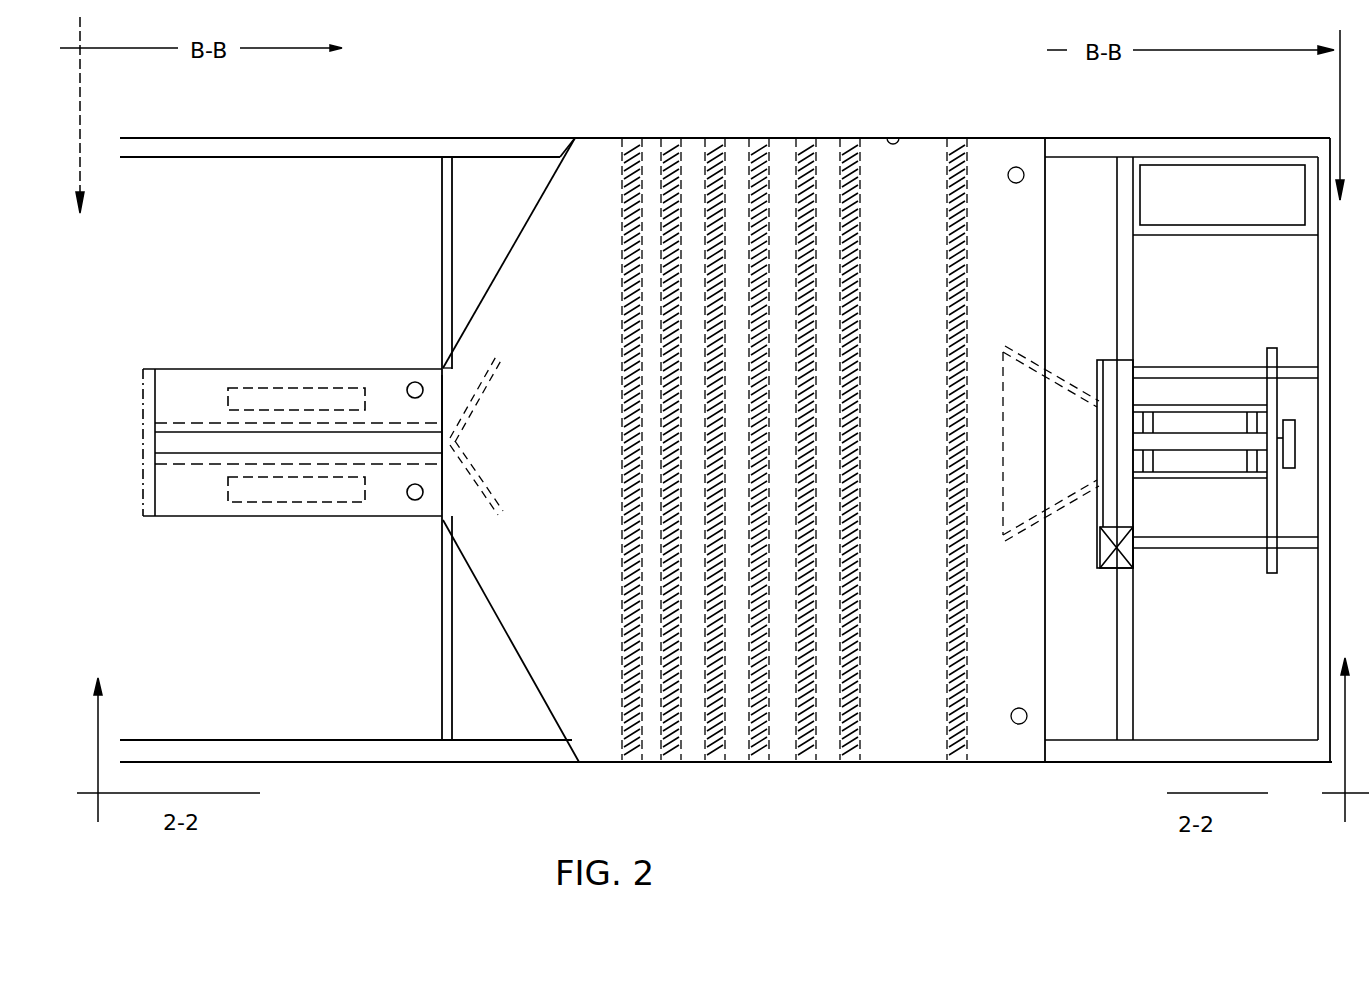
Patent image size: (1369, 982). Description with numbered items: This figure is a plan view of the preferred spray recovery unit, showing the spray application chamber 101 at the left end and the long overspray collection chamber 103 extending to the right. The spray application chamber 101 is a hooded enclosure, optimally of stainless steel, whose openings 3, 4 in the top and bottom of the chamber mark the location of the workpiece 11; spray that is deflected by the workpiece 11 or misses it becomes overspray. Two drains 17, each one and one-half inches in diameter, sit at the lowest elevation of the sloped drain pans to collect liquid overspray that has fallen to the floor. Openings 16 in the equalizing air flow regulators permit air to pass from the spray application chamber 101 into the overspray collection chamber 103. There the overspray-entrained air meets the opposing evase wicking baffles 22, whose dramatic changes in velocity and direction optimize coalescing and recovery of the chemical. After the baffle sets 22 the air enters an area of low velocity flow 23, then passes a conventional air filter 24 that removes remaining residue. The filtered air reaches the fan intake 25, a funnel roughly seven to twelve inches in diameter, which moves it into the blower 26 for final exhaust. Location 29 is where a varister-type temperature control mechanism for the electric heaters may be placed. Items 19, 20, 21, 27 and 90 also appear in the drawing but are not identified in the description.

The opening 3 is at (269, 438).
The opening 4 is at (280, 385).
The workpiece 11 is at (185, 416).
The openings 16 is at (438, 398).
The drains 17 is at (408, 383).
The guide 19 is at (478, 410).
The opening 20 is at (1014, 165).
The tapered wall 21 is at (590, 182).
The wicking baffles 22 is at (843, 134).
The area of low velocity flow 23 is at (910, 722).
The air filter 24 is at (993, 120).
The fan intake 25 is at (1018, 352).
The blower 26 is at (1120, 378).
The housing corner 27 is at (1342, 725).
The temperature control mechanism location 29 is at (1200, 185).
The corner 90 is at (447, 390).
The spray application chamber 101 is at (170, 367).
The overspray collection chamber 103 is at (399, 133).